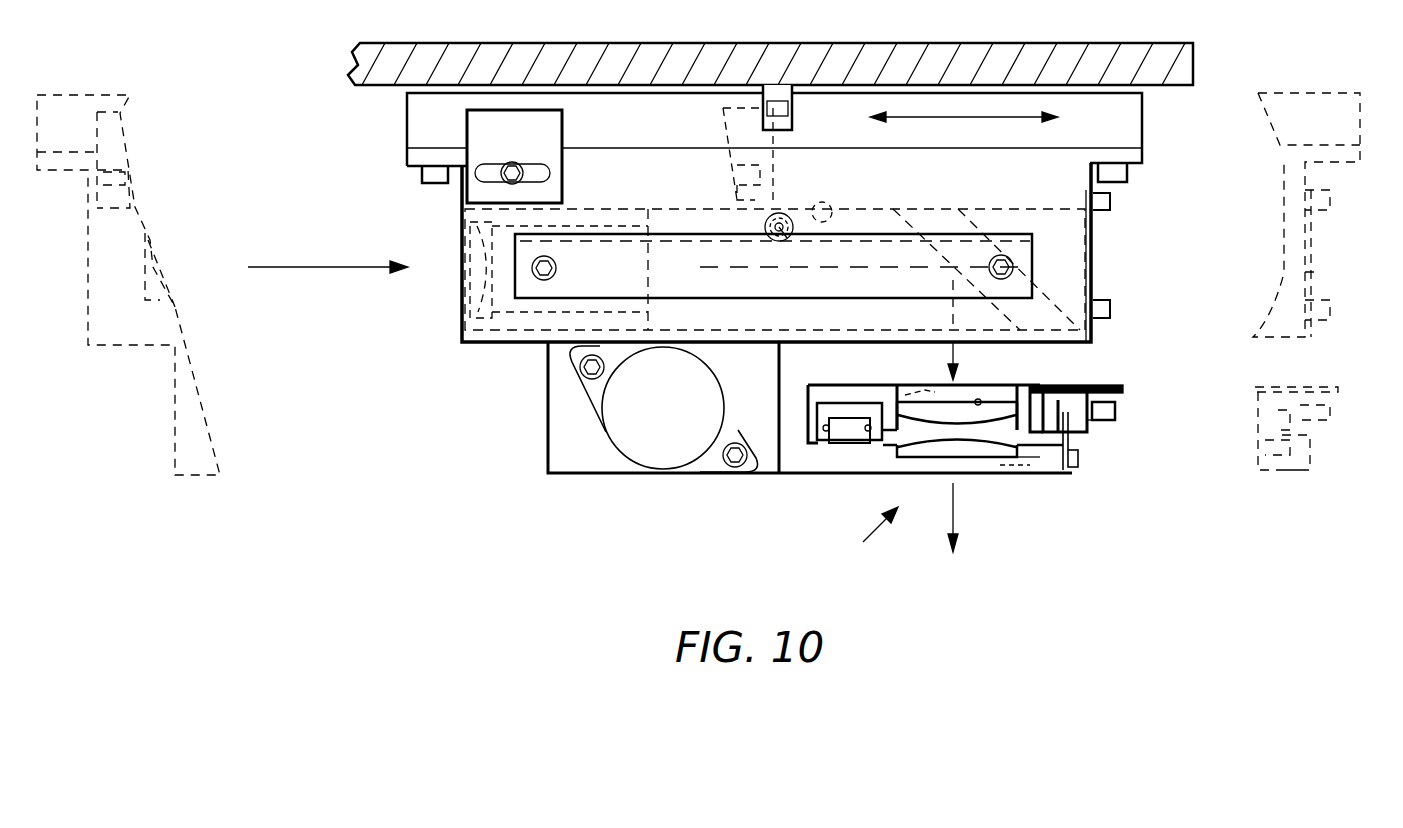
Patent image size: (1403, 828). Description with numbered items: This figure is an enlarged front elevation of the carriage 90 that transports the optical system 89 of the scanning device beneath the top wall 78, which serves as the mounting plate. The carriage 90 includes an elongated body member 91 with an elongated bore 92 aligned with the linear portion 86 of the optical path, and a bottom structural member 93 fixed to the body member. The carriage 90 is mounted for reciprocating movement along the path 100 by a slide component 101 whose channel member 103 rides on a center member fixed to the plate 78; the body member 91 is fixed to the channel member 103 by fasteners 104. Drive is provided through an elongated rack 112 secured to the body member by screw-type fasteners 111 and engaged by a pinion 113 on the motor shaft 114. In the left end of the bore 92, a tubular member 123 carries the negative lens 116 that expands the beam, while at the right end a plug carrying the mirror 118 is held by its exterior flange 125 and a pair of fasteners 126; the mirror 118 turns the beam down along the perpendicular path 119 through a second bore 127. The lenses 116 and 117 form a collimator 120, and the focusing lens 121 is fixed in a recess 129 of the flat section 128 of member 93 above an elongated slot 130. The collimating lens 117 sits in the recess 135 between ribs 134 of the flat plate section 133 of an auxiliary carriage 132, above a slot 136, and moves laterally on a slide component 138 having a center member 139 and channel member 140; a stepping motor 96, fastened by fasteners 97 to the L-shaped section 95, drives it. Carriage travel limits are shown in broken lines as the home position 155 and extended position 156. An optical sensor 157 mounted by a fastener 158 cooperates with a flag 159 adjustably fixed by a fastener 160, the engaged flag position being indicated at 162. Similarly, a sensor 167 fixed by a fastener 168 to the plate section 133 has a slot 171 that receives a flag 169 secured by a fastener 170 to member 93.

The top wall 78 is at (905, 43).
The slide component 101 is at (1142, 113).
The channel member 103 is at (1142, 141).
The fasteners 104 is at (435, 183).
The optical sensor 157 is at (793, 112).
The fastener 158 is at (792, 124).
The flag component 159 is at (562, 130).
The fastener 160 is at (532, 155).
The flag position 162 is at (775, 178).
The elongated bore 92 is at (812, 206).
The tubular member 123 is at (613, 210).
The body member 91 is at (468, 221).
The linear portion of the optical path 86 is at (310, 265).
The negative lens 116 is at (463, 279).
The collimator 120 is at (497, 289).
The screw-type fasteners 111 is at (558, 270).
The rack 112 is at (665, 238).
The pinion 113 is at (765, 227).
The shaft 114 is at (787, 242).
The mirror 118 is at (922, 254).
The exterior flange 125 is at (1094, 256).
The fasteners 126 is at (1110, 208).
The bore 127 is at (908, 325).
The carriage 90 is at (504, 345).
The L-shaped section 95 is at (546, 434).
The fasteners 97 is at (601, 372).
The stepping motor 96 is at (631, 470).
The slide component 138 is at (850, 418).
The channel member 140 is at (840, 403).
The center member 139 is at (843, 447).
The ribs 134 is at (895, 400).
The slot 136 is at (946, 395).
The optical path 119 is at (957, 358).
The recess 135 is at (1008, 381).
The flat plate section 133 is at (1080, 390).
The auxiliary carriage 132 is at (1126, 394).
The optical sensor 167 is at (1117, 416).
The fastener 168 is at (1117, 423).
The sensor slot 171 is at (1070, 446).
The flag 169 is at (1079, 455).
The fastener 170 is at (1075, 473).
The flat section 128 is at (1045, 480).
The recess 129 is at (1012, 459).
The slot 130 is at (992, 483).
The structural member 93 is at (852, 478).
The optical system 89 is at (867, 535).
The collimating lens 117 is at (957, 416).
The focusing lens 121 is at (973, 449).
The path 100 is at (975, 120).
The home position 155 is at (1320, 275).
The extended position 156 is at (83, 238).